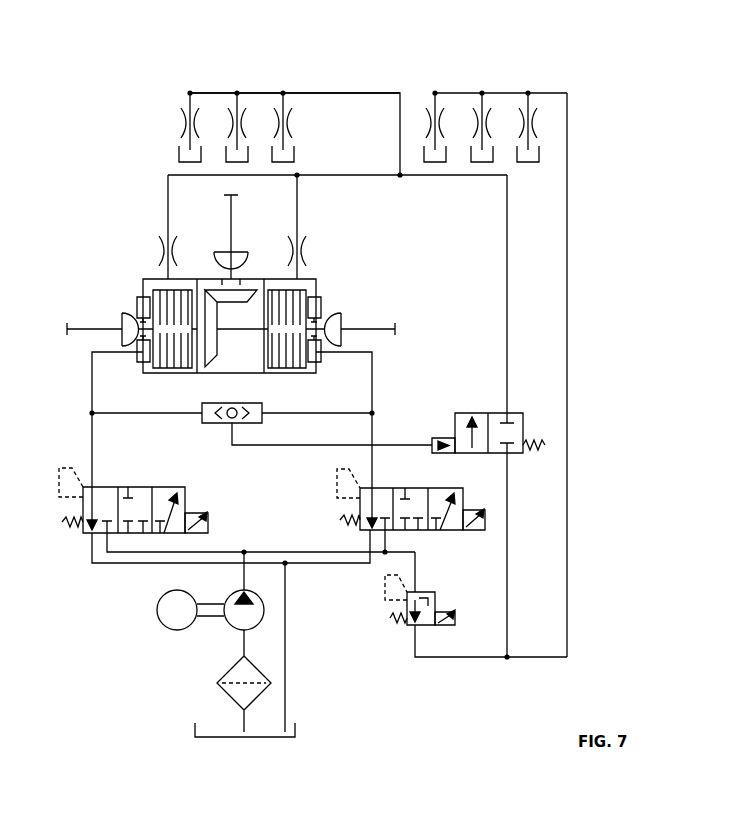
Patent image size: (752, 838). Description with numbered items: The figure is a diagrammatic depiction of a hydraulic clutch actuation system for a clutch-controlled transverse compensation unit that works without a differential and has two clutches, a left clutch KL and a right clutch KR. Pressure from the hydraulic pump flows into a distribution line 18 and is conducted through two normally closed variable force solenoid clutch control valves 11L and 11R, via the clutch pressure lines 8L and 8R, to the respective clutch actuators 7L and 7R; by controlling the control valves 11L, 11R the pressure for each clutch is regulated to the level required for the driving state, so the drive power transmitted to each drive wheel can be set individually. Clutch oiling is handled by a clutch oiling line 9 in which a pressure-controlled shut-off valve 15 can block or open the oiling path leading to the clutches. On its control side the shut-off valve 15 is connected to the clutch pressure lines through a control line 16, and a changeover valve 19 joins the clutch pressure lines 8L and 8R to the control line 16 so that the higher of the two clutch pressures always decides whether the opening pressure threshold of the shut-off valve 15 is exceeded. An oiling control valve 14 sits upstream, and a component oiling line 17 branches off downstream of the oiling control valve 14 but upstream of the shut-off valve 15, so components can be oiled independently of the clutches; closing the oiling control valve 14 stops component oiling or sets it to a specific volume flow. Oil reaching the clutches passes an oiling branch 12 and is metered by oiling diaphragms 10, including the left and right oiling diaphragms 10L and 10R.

The oiling diaphragm 10 is at (183, 122).
The left oiling diaphragm 10L is at (160, 252).
The right oiling diaphragm 10R is at (306, 255).
The oiling branch 12 is at (392, 93).
The component oiling line 17 is at (567, 200).
The clutch oiling line 9 is at (506, 313).
The left clutch KL is at (123, 280).
The right clutch KR is at (344, 284).
The left clutch actuator 7L is at (137, 300).
The right clutch actuator 7R is at (321, 302).
The left clutch pressure line 8L is at (92, 386).
The right clutch pressure line 8R is at (372, 363).
The changeover valve 19 is at (214, 423).
The control line 16 is at (305, 445).
The shut-off valve 15 is at (527, 405).
The left clutch control valve 11L is at (64, 549).
The right clutch control valve 11R is at (473, 555).
The oiling control valve 14 is at (388, 622).
The distribution line 18 is at (298, 552).